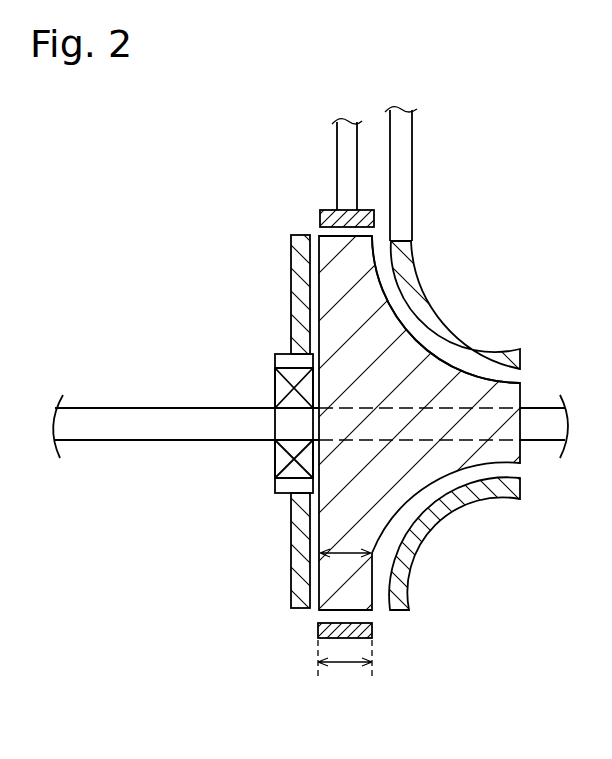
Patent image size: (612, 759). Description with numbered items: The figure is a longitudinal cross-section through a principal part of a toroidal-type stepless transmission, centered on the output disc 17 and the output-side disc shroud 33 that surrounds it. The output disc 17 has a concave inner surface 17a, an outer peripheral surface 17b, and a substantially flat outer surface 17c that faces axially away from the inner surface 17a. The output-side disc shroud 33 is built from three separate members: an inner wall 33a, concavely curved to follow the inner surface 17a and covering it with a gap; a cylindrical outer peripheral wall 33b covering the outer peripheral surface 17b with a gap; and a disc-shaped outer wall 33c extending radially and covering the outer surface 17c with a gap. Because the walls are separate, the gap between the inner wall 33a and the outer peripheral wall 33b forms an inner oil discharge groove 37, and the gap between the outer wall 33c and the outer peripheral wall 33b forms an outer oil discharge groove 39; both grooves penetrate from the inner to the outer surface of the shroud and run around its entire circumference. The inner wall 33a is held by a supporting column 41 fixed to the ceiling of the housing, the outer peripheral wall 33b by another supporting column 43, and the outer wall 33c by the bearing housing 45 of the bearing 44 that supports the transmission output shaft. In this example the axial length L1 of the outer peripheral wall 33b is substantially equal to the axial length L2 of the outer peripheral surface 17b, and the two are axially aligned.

The output disc 17 is at (382, 517).
The inner surface 17a is at (440, 347).
The outer peripheral surface 17b is at (320, 610).
The outer surface 17c is at (318, 283).
The output-side disc shroud 33 is at (423, 234).
The inner wall 33a is at (423, 283).
The outer peripheral wall 33b is at (372, 632).
The outer wall 33c is at (290, 563).
The inner oil discharge groove 37 is at (372, 615).
The outer oil discharge groove 39 is at (312, 613).
The supporting column 41 is at (413, 118).
The supporting column 43 is at (337, 178).
The bearing 44 is at (275, 389).
The bearing housing 45 is at (275, 361).
The axial length of the outer peripheral wall L1 is at (342, 666).
The axial length of the outer peripheral surface L2 is at (334, 552).